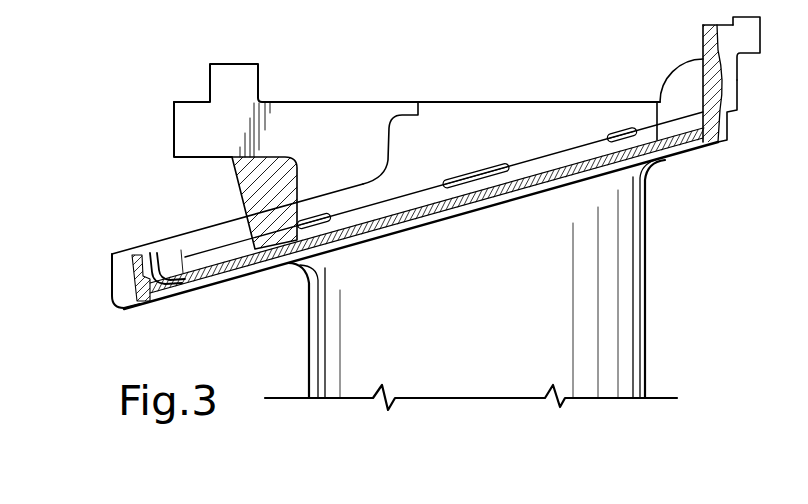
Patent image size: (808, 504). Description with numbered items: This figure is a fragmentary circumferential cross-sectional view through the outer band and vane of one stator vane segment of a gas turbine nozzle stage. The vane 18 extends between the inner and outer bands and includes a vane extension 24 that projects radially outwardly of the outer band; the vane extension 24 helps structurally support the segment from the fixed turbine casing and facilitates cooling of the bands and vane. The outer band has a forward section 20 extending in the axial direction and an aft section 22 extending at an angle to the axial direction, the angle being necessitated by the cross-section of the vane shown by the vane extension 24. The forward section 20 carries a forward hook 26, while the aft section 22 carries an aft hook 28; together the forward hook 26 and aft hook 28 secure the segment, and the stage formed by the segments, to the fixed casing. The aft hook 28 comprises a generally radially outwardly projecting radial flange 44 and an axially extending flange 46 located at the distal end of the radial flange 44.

The vane 18 is at (628, 310).
The forward section 20 is at (212, 262).
The aft section 22 is at (593, 160).
The vane extension 24 is at (462, 127).
The forward hook 26 is at (180, 117).
The aft hook 28 is at (747, 58).
The radial flange 44 is at (705, 57).
The axially extending flange 46 is at (752, 28).